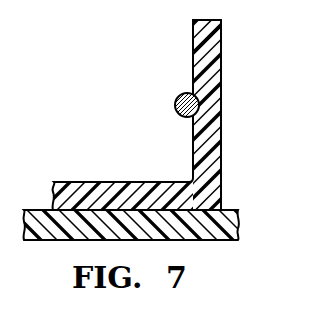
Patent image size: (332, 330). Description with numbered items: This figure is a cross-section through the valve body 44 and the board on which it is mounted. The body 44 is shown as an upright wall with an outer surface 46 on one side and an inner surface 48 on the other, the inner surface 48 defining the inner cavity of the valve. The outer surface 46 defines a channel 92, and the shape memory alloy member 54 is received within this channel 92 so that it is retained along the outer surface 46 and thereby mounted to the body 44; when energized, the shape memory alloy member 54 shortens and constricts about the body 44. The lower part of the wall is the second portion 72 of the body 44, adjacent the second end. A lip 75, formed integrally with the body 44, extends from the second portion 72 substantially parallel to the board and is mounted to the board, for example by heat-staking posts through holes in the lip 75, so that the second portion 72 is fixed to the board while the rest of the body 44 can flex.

The body 44 is at (186, 37).
The outer surface 46 is at (193, 162).
The inner surface 48 is at (221, 84).
The shape memory alloy member 54 is at (176, 103).
The second portion 72 is at (208, 44).
The lip 75 is at (76, 183).
The channel 92 is at (192, 91).